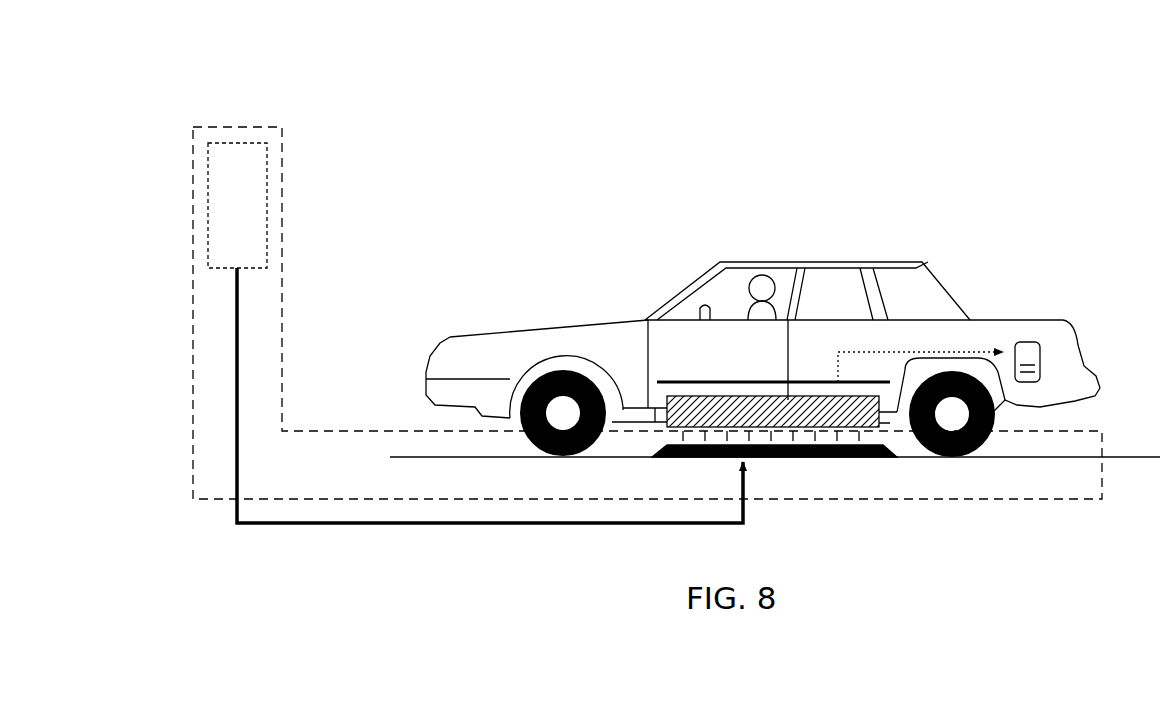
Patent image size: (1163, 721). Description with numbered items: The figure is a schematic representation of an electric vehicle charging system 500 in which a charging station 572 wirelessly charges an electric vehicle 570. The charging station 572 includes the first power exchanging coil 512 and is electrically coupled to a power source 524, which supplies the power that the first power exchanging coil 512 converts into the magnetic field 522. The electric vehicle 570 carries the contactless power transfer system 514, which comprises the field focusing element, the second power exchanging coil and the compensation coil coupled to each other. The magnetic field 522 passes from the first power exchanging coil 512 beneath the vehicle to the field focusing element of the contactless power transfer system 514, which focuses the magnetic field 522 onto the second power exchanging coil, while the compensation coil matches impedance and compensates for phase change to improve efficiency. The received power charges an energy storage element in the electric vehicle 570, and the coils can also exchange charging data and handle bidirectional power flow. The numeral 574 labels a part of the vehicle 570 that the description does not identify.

The electric vehicle charging system 500 is at (1042, 88).
The charging station 572 is at (278, 121).
The power source 524 is at (268, 216).
The electric vehicle 570 is at (929, 262).
The vehicle indicator light 574 is at (1048, 356).
The contactless power transfer system 514 is at (689, 395).
The magnetic field 522 is at (680, 433).
The first power exchanging coil 512 is at (825, 458).